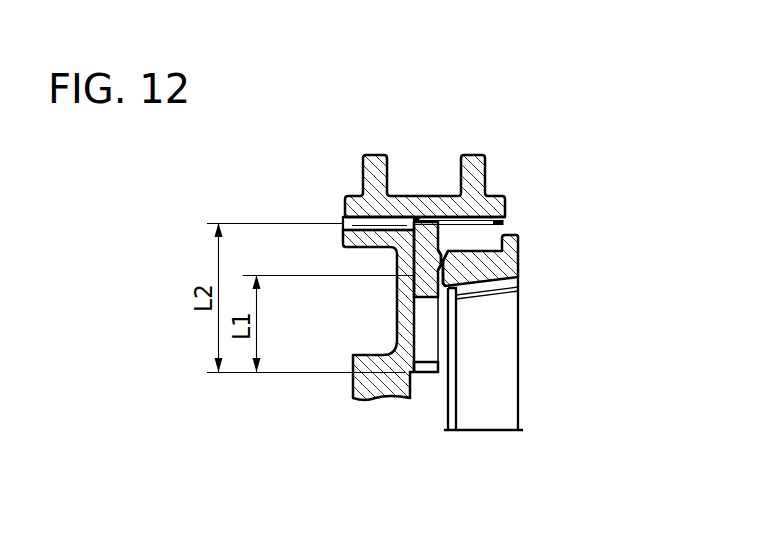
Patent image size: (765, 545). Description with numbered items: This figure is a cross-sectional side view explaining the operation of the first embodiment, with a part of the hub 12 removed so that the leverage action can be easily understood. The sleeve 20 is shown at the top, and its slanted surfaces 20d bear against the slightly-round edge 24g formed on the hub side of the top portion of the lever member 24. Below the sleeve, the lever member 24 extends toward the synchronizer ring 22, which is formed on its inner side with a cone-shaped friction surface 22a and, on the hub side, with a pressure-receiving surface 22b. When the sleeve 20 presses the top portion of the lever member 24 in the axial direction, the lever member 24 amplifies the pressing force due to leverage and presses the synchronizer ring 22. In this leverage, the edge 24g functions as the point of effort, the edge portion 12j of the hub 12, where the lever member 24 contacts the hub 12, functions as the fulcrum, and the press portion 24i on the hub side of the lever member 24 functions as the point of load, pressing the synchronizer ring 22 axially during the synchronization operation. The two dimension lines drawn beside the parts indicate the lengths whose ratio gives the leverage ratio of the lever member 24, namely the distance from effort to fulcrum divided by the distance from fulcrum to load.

The hub 12 is at (358, 380).
The edge portion 12j is at (408, 376).
The sleeve 20 is at (453, 205).
The slanted surface 20d is at (398, 203).
The synchronizer ring 22 is at (506, 259).
The cone-shaped friction surface 22a is at (500, 292).
The pressure-receiving surface 22b is at (432, 270).
The lever member 24 is at (428, 270).
The edge 24g is at (340, 221).
The press portion 24i is at (462, 263).